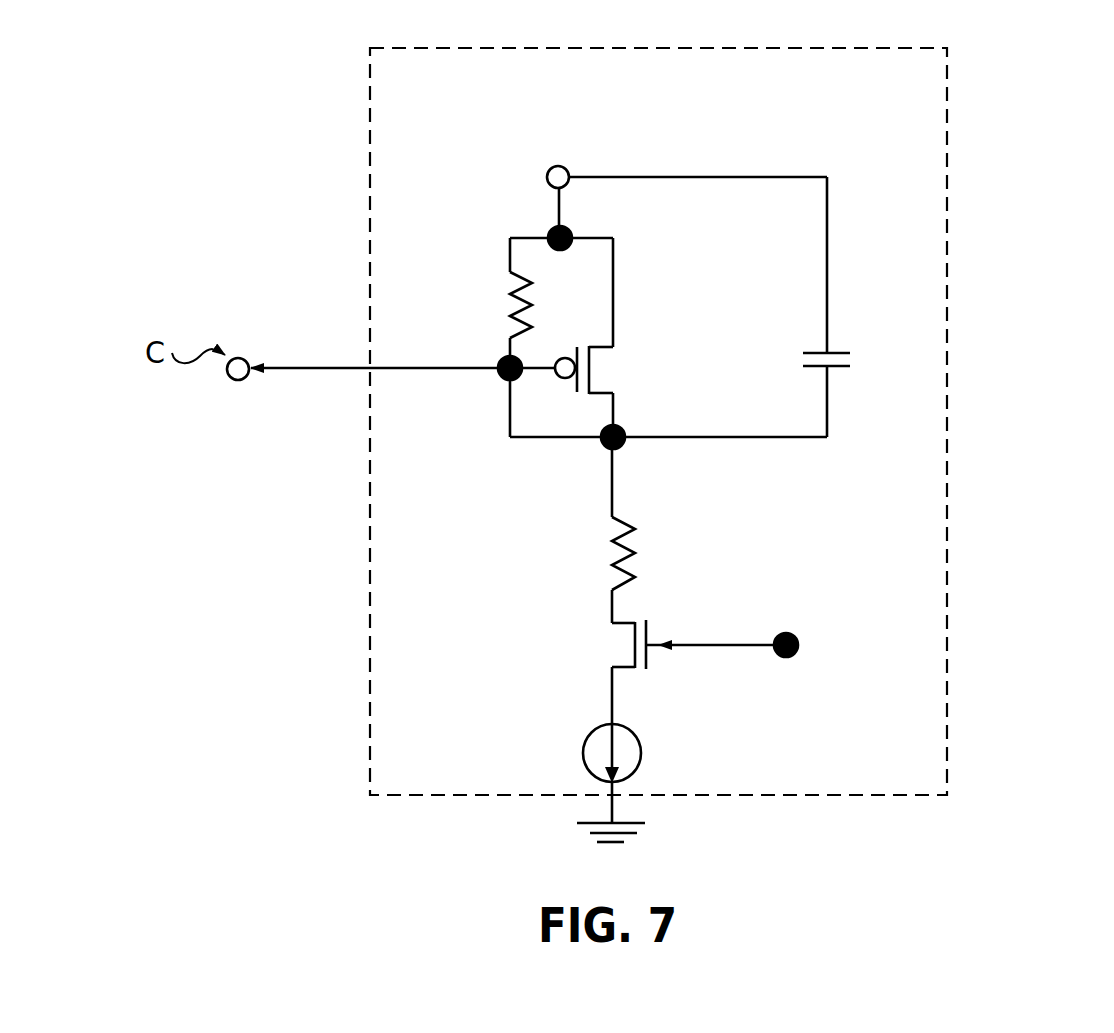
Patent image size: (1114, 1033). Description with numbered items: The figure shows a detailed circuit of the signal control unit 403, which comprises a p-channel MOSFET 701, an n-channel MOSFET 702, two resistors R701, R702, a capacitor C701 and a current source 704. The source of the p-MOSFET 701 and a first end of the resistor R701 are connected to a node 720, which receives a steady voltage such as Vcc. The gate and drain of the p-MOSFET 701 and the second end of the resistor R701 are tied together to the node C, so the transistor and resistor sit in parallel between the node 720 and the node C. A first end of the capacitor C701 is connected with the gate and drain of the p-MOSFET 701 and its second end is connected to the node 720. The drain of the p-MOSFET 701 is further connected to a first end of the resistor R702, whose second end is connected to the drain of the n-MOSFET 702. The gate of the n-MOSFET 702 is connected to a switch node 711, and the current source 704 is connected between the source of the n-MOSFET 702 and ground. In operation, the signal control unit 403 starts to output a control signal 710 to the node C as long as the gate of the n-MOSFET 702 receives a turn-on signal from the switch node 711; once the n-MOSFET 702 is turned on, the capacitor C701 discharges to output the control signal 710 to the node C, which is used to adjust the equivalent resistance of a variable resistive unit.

The signal control unit 403 is at (947, 146).
The node 720 is at (571, 162).
The resistor R701 is at (482, 337).
The control signal 710 is at (299, 364).
The p-channel MOSFET 701 is at (603, 371).
The capacitor C701 is at (792, 307).
The resistor R702 is at (581, 530).
The n-channel MOSFET 702 is at (617, 637).
The switch node 711 is at (799, 632).
The current source 704 is at (652, 748).